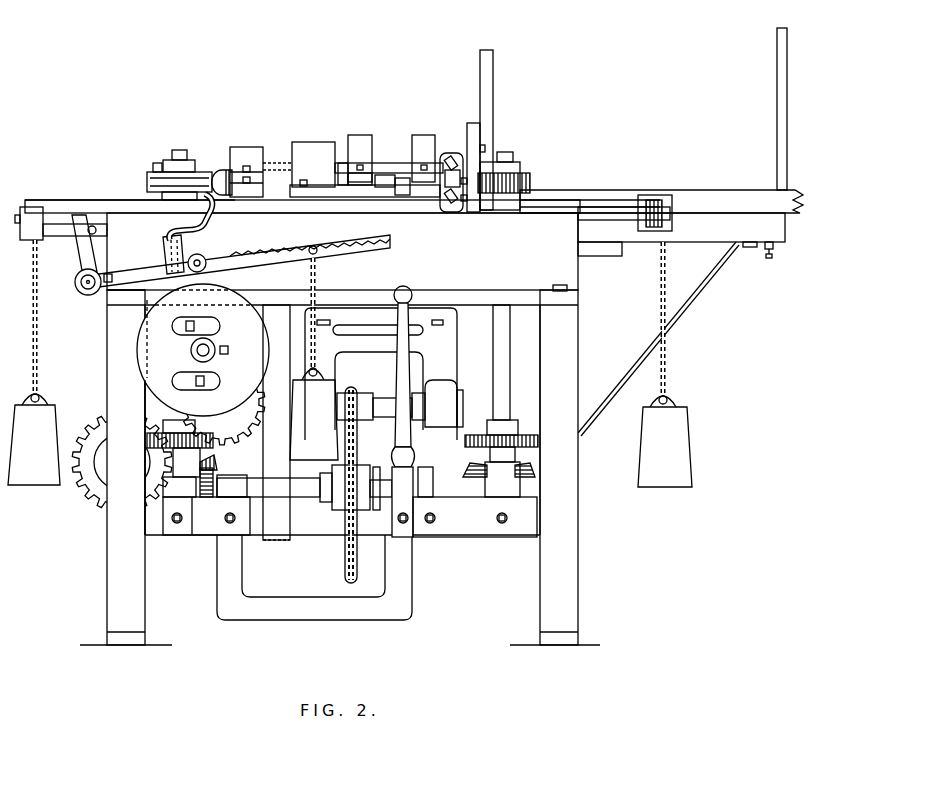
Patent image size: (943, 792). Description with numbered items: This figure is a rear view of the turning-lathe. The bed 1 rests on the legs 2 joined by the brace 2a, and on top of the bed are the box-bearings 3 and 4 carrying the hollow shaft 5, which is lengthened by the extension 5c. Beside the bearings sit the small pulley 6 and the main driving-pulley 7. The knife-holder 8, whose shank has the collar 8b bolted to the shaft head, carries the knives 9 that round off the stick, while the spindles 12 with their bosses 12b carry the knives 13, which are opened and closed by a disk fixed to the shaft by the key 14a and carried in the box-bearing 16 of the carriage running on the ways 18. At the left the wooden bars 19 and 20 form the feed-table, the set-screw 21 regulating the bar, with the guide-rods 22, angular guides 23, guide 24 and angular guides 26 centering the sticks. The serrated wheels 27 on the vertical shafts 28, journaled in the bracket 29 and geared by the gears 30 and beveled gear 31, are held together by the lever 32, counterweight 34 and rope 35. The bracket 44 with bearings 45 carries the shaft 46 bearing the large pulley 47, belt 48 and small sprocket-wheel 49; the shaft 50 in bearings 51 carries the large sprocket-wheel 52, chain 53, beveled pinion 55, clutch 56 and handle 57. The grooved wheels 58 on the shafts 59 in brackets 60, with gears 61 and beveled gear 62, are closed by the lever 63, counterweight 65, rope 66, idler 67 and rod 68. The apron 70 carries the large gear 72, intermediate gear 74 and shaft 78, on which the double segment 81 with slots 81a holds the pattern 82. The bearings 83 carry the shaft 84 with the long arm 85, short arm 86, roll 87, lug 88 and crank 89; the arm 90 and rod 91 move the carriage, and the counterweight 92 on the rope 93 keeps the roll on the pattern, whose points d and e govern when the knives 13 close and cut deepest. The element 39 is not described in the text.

The bed 1 is at (302, 218).
The legs 2 is at (340, 429).
The brace 2a is at (314, 577).
The box-bearing 3 is at (423, 158).
The box-bearing 4 is at (245, 155).
The hollow shaft 5 is at (378, 173).
The extension 5c is at (224, 170).
The small pulley 6 is at (283, 165).
The main driving-pulley 7 is at (313, 164).
The knife-holder 8 is at (451, 182).
The collar 8b is at (447, 153).
The knives 9 is at (451, 165).
The spindles 12 is at (388, 188).
The boss 12b is at (396, 176).
The knives 13 is at (403, 196).
The key 14a is at (343, 162).
The box-bearing 16 is at (360, 160).
The ways 18 is at (355, 193).
The wooden bar 19 is at (681, 234).
The wooden bar 20 is at (661, 201).
The set-screw 21 is at (761, 260).
The guide-rods 22 is at (777, 107).
The angular guides 23 is at (470, 211).
The guide 24 is at (480, 124).
The angular guides 26 is at (493, 90).
The serrated wheels 27 is at (530, 182).
The vertical shafts 28 is at (506, 360).
The bracket 29 is at (502, 479).
The gears 30 is at (538, 440).
The beveled gear 31 is at (532, 468).
The lever 32 is at (640, 210).
The counterweight 34 is at (665, 441).
The rope 35 is at (666, 350).
The plate 39 is at (600, 215).
The bracket 44 is at (381, 374).
The bearings 45 is at (460, 410).
The shaft 46 is at (383, 398).
The large pulley 47 is at (276, 553).
The belt 48 is at (276, 422).
The small sprocket-wheel 49 is at (356, 392).
The shaft 50 is at (311, 498).
The bearings 51 is at (237, 475).
The large sprocket-wheel 52 is at (338, 510).
The chain 53 is at (357, 445).
The beveled pinion 55 is at (206, 498).
The clutch 56 is at (414, 464).
The handle 57 is at (410, 370).
The grooved wheels 58 is at (147, 179).
The vertical shafts 59 is at (170, 455).
The brackets 60 is at (206, 506).
The gears 61 is at (147, 436).
The beveled gear 62 is at (210, 468).
The lever 63 is at (58, 206).
The counterweight 65 is at (34, 439).
The rope 66 is at (37, 340).
The idler 67 is at (25, 240).
The rod 68 is at (56, 236).
The apron 70 is at (150, 405).
The large gear 72 is at (246, 422).
The intermediate gear 74 is at (100, 505).
The shaft 78 is at (191, 352).
The double segment 81 is at (216, 340).
The slots 81a is at (216, 322).
The pattern 82 is at (238, 359).
The bearings 83 is at (114, 305).
The shaft 84 is at (77, 286).
The long arm 85 is at (262, 249).
The short arm 86 is at (128, 270).
The roll 87 is at (201, 255).
The lug 88 is at (163, 242).
The crank 89 is at (201, 217).
The arm 90 is at (82, 260).
The rod 91 is at (98, 238).
The counterweight 92 is at (314, 414).
The rope 93 is at (316, 270).
The point d is at (166, 283).
The point e is at (168, 325).